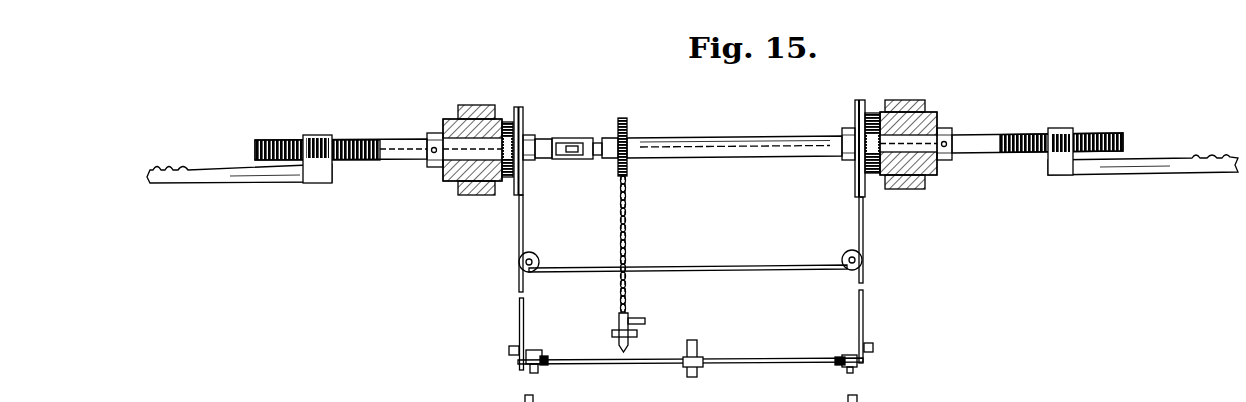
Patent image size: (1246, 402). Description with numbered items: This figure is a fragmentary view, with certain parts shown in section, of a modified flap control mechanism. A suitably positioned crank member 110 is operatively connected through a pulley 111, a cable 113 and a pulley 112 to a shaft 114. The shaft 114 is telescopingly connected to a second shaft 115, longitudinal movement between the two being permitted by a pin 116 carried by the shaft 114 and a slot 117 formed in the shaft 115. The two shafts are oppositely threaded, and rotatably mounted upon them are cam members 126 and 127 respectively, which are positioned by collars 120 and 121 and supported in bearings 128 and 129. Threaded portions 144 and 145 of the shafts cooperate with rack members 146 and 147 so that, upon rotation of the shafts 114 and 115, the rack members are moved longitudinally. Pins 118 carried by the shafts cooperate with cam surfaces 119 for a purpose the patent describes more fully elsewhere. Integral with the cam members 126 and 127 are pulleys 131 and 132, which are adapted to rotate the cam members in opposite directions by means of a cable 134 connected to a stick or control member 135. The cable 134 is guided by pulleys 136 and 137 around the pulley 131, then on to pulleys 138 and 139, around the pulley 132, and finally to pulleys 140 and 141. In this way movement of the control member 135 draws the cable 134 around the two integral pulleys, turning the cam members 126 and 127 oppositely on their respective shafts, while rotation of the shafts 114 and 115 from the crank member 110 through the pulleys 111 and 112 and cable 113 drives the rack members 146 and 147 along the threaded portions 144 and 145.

The crank member 110 is at (641, 320).
The pulley 111 is at (638, 346).
The pulley 112 is at (628, 128).
The cable 113 is at (626, 245).
The shaft 114 is at (710, 148).
The shaft 115 is at (552, 138).
The pin 116 is at (567, 158).
The slot 117 is at (585, 160).
The pins 118 is at (453, 182).
The cam surfaces 119 is at (472, 196).
The collar 120 is at (432, 168).
The collar 121 is at (531, 167).
The cam member 126 is at (937, 122).
The cam member 127 is at (443, 122).
The bearing 128 is at (497, 105).
The bearing 129 is at (927, 93).
The pulley 131 is at (514, 121).
The pulley 132 is at (866, 105).
The cable 134 is at (780, 361).
The control member 135 is at (700, 358).
The pulley 136 is at (546, 359).
The pulley 137 is at (510, 342).
The pulley 138 is at (518, 265).
The pulley 139 is at (863, 262).
The pulley 140 is at (867, 340).
The pulley 141 is at (856, 364).
The threaded portion 144 is at (1017, 153).
The threaded portion 145 is at (358, 160).
The rack member 146 is at (1063, 157).
The rack member 147 is at (320, 167).